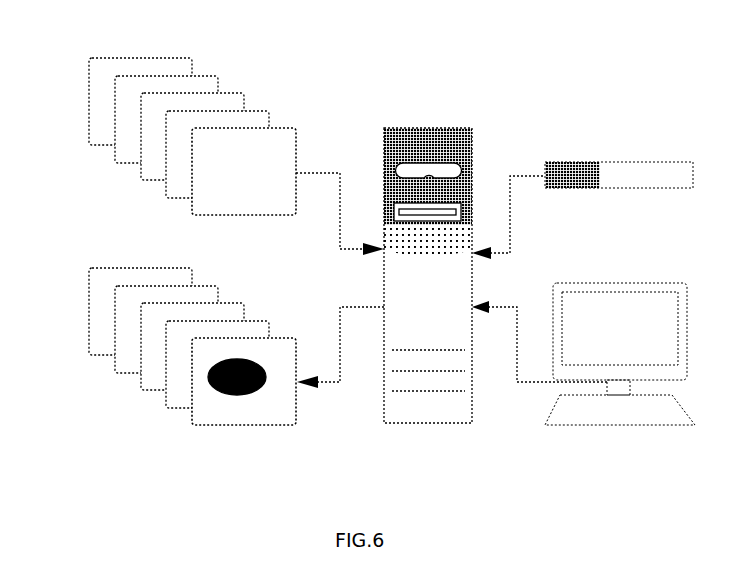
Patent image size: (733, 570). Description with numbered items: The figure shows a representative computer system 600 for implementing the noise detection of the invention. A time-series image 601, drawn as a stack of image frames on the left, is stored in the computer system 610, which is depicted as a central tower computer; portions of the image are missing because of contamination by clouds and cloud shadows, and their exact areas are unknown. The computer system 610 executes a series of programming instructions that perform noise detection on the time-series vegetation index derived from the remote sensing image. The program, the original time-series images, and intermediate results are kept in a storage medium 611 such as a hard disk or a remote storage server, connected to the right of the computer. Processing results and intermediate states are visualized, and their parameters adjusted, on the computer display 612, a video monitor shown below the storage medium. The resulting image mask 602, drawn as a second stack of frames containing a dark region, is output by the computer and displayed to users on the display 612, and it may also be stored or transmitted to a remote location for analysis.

The computer system 600 is at (451, 260).
The time-series image 601 is at (86, 99).
The image mask 602 is at (86, 307).
The computer system 610 is at (443, 128).
The storage medium 611 is at (630, 157).
The computer display 612 is at (630, 276).